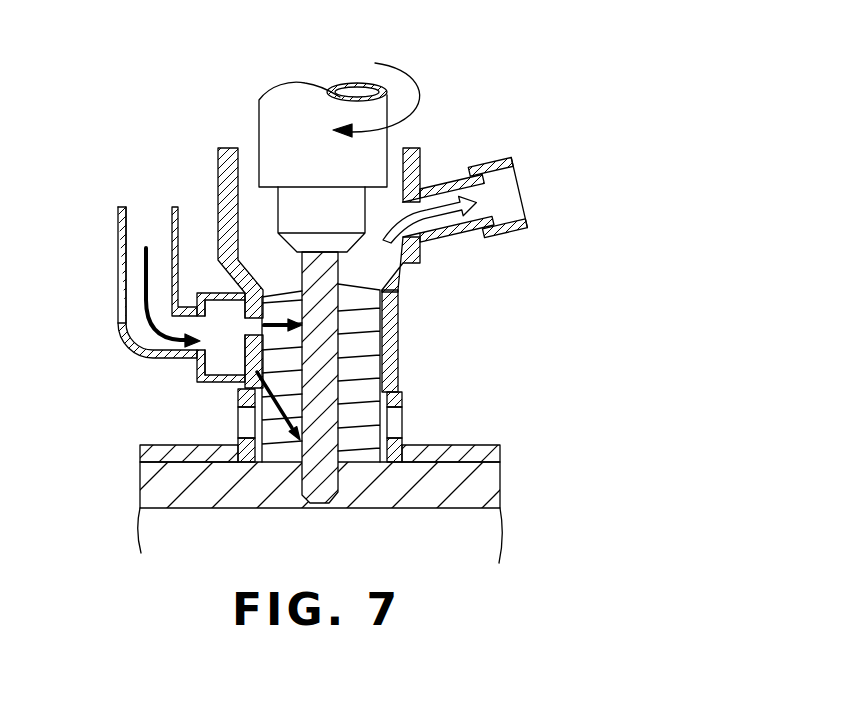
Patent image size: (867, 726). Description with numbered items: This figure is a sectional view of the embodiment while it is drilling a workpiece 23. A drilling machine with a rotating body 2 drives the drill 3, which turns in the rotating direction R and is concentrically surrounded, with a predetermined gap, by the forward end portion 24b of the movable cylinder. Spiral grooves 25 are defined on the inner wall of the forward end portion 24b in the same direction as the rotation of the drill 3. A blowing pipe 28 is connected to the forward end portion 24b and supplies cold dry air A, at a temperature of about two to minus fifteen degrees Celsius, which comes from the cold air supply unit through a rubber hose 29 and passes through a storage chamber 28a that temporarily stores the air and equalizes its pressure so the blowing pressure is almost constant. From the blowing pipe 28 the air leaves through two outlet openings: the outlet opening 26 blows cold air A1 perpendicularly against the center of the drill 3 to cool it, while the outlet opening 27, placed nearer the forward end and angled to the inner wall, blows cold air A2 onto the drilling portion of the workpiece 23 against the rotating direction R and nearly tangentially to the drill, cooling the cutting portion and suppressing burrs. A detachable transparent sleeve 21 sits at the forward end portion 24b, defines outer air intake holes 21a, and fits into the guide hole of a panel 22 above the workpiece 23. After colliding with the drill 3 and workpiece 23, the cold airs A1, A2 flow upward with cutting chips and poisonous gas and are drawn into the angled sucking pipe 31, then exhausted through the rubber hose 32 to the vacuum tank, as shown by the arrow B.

The rotary drive body 2 is at (251, 94).
The drill 3 is at (334, 285).
The transparent sleeve 21 is at (415, 400).
The outer air intake holes 21a is at (415, 426).
The panel 22 is at (140, 456).
The workpiece 23 is at (140, 490).
The forward end portion 24b is at (398, 373).
The spiral grooves 25 is at (397, 350).
The outlet opening 26 is at (243, 313).
The outlet opening 27 is at (237, 360).
The blowing pipe 28 is at (157, 353).
The storage chamber 28a is at (197, 369).
The rubber hose 29 is at (106, 244).
The sucking pipe 31 is at (455, 176).
The rubber hose 32 is at (495, 160).
The cold dry air A is at (166, 281).
The cold air A1 is at (263, 300).
The cold air A2 is at (241, 423).
The exhaust flow B is at (422, 219).
The rotating direction R is at (400, 65).